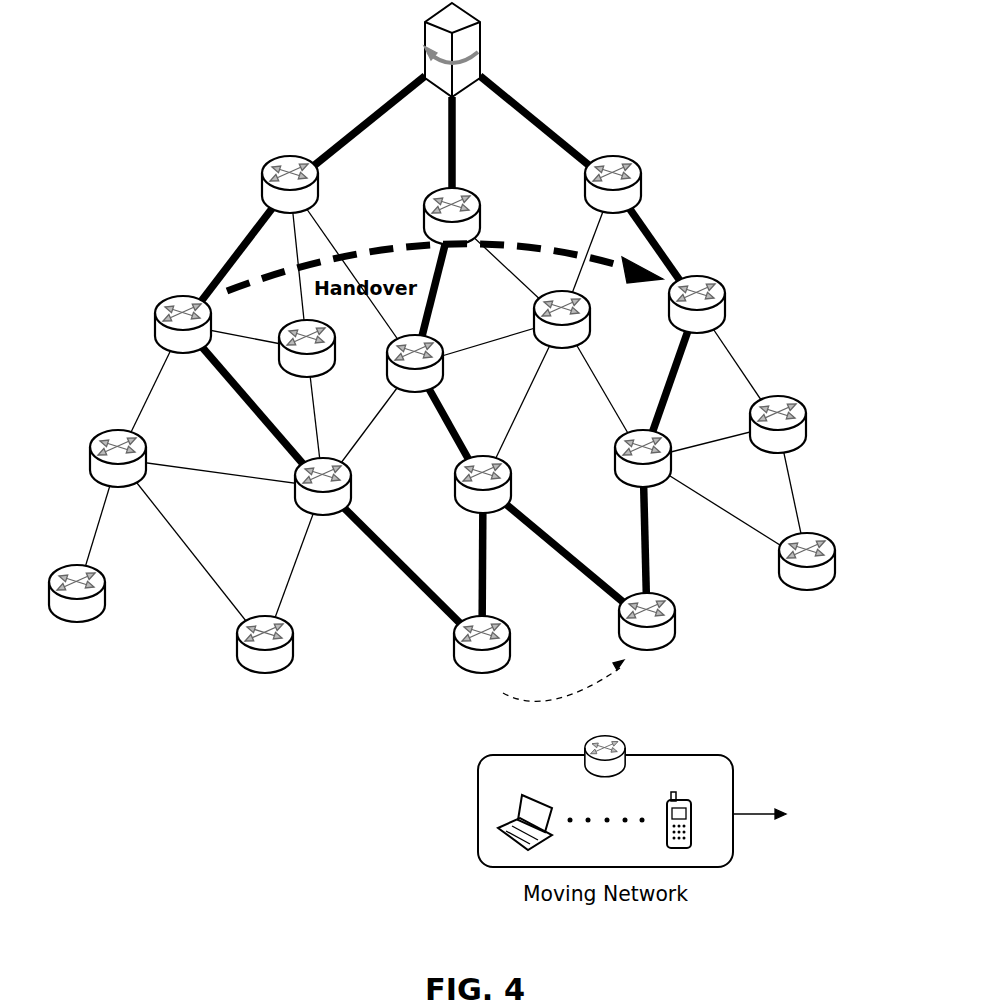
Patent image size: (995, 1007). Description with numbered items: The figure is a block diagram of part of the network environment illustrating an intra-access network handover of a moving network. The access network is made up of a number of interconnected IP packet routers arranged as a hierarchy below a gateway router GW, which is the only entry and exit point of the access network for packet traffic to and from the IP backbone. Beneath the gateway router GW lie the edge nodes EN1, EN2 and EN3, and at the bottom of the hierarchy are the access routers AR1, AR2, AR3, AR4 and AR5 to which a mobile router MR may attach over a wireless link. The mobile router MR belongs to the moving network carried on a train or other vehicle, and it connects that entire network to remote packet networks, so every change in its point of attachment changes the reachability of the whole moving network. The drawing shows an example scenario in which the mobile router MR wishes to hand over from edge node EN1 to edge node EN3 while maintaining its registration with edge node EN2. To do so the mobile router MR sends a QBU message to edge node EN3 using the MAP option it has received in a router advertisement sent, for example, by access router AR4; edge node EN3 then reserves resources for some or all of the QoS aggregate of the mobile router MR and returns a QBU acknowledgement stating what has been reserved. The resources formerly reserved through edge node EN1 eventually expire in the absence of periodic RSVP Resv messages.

The gateway router GW is at (478, 50).
The edge node EN1 is at (157, 324).
The edge node EN2 is at (440, 364).
The edge node EN3 is at (722, 304).
The access router AR1 is at (101, 593).
The access router AR2 is at (291, 644).
The access router AR3 is at (508, 644).
The access router AR4 is at (672, 621).
The access router AR5 is at (830, 561).
The mobile router MR is at (619, 754).